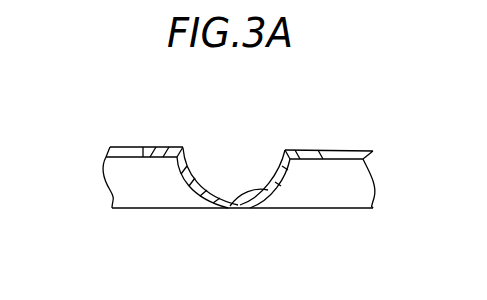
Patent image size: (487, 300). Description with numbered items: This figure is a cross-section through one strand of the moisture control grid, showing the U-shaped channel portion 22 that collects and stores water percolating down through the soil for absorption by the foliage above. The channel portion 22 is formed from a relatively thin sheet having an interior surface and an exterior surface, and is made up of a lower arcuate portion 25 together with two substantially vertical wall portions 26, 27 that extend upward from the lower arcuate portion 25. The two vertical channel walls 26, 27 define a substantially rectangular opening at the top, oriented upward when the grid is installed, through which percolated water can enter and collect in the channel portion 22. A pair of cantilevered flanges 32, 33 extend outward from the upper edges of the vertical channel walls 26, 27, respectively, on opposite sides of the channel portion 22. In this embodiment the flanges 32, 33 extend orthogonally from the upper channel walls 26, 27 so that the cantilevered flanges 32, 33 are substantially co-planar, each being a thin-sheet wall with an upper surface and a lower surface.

The channel portion 22 is at (268, 133).
The lower arcuate portion 25 is at (268, 190).
The vertical wall portion 26 is at (186, 157).
The vertical wall portion 27 is at (288, 160).
The cantilevered flange 32 is at (157, 148).
The cantilevered flange 33 is at (325, 152).